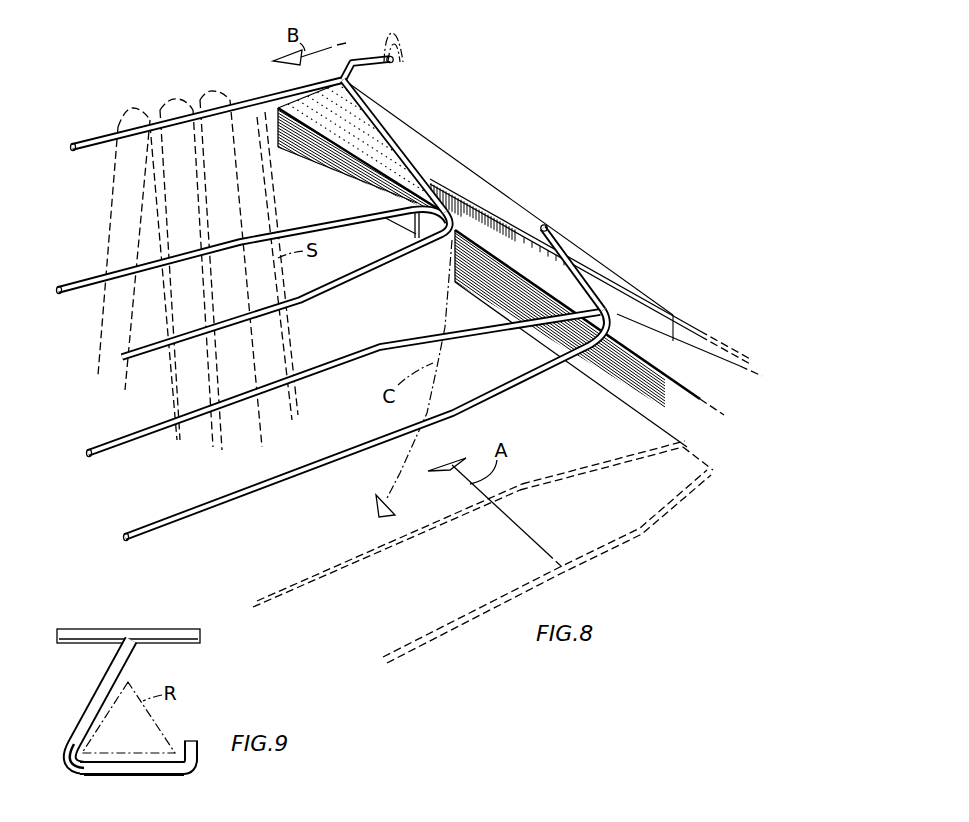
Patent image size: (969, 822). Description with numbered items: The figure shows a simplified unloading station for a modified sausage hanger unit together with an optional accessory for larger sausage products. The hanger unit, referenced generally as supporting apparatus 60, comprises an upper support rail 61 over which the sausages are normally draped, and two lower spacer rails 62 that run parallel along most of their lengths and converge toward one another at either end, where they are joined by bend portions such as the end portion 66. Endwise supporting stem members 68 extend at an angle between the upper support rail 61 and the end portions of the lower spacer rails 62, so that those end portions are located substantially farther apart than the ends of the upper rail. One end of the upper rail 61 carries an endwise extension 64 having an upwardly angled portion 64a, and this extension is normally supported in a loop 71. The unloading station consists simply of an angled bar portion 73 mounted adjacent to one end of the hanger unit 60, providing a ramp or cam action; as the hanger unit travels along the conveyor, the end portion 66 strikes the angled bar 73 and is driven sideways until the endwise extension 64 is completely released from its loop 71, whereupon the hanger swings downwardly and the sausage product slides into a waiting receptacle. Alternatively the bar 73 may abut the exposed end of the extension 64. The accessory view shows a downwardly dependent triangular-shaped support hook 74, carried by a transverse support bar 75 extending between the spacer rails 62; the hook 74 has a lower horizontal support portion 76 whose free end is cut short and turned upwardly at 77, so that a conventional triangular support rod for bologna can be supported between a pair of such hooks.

In FIG. 8, the sausage supporting apparatus 60 is at (377, 284).
In FIG. 8, the upper support rail 61 is at (103, 137).
In FIG. 8, the lower spacer rail 62 is at (88, 282).
In FIG. 8, the endwise extension 64 is at (367, 61).
In FIG. 8, the upwardly angled portion 64a is at (355, 79).
In FIG. 8, the bend portion 66 is at (408, 238).
In FIG. 8, the endwise supporting stem member 68 is at (407, 157).
In FIG. 8, the loop 71 is at (408, 60).
In FIG. 8, the angled bar portion 73 is at (488, 208).
In FIG. 9, the triangular-shaped support hook 74 is at (92, 707).
In FIG. 9, the transverse support bar 75 is at (105, 633).
In FIG. 9, the lower horizontal support portion 76 is at (145, 761).
In FIG. 9, the upwardly turned free end 77 is at (188, 740).